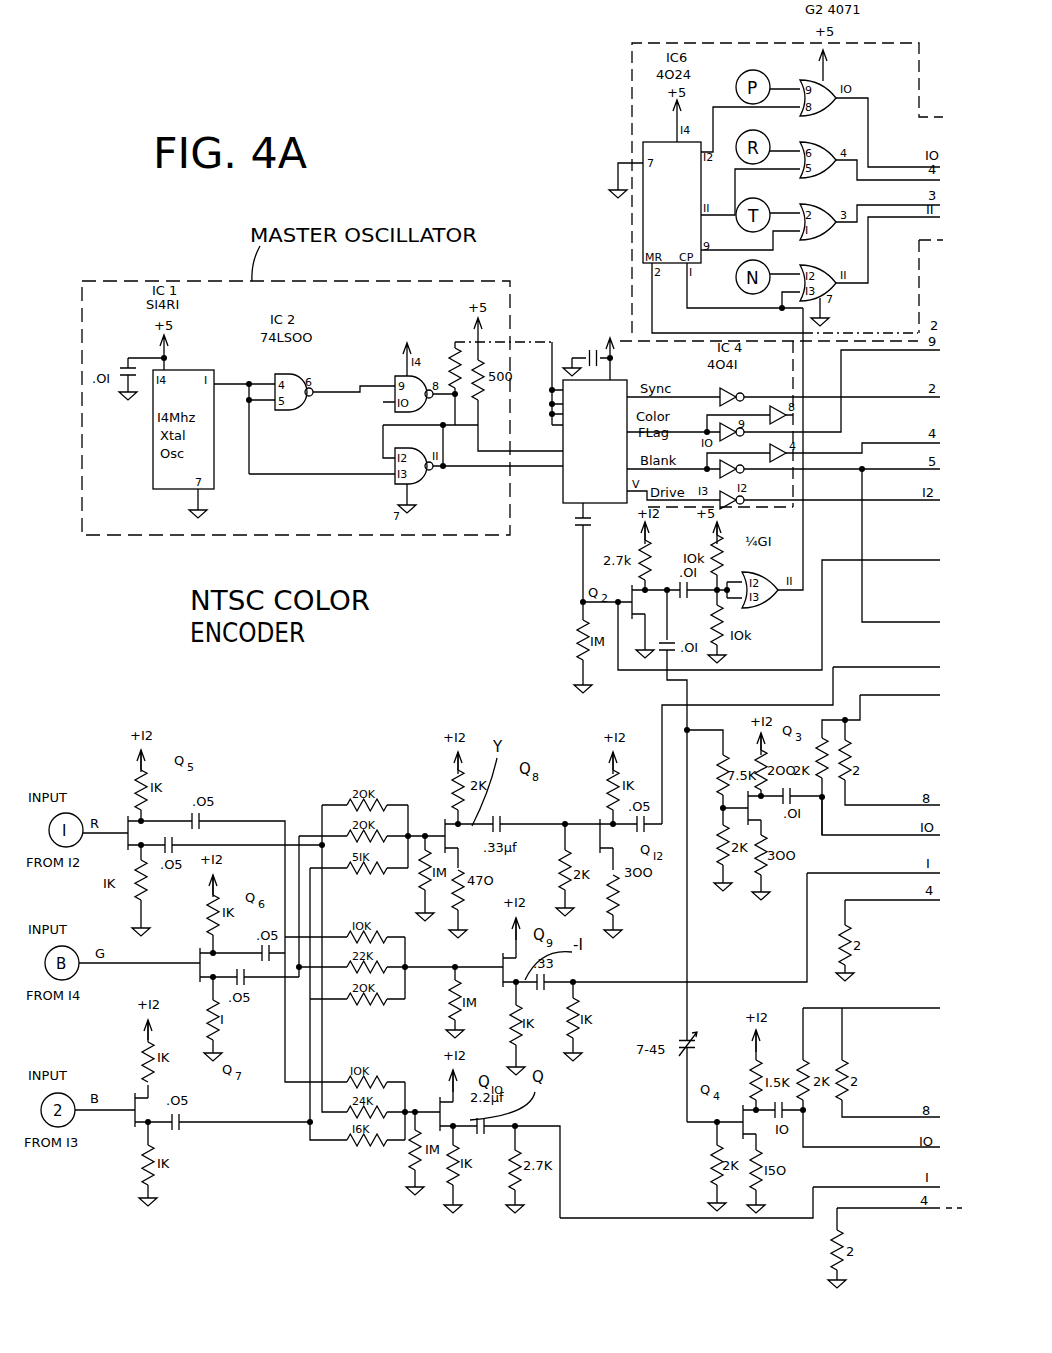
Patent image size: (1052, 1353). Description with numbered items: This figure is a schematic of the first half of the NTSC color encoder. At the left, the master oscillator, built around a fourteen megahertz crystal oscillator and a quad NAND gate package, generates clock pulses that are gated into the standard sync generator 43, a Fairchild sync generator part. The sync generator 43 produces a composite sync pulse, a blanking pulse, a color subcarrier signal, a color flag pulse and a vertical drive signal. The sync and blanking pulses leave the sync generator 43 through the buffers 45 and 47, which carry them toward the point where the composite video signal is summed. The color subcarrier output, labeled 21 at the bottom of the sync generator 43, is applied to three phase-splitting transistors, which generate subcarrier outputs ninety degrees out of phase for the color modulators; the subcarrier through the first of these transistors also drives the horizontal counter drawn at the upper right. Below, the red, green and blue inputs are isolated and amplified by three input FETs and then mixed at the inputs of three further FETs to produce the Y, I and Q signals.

The color subcarrier generator IC3 3262A 21 is at (563, 500).
The sync generator 43 is at (614, 381).
The buffer 45 is at (745, 394).
The buffer 47 is at (747, 471).